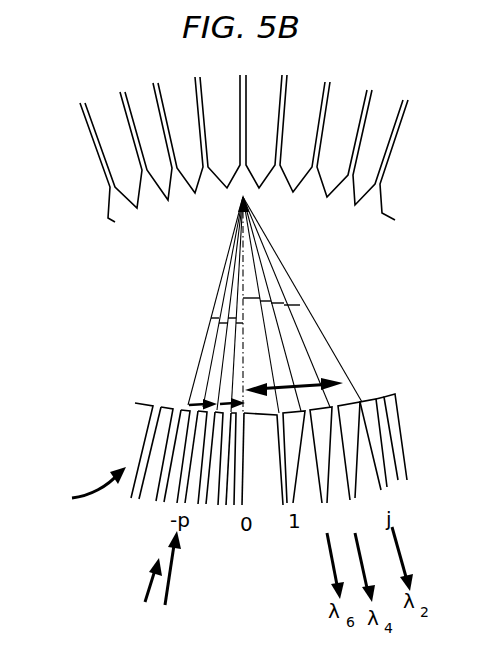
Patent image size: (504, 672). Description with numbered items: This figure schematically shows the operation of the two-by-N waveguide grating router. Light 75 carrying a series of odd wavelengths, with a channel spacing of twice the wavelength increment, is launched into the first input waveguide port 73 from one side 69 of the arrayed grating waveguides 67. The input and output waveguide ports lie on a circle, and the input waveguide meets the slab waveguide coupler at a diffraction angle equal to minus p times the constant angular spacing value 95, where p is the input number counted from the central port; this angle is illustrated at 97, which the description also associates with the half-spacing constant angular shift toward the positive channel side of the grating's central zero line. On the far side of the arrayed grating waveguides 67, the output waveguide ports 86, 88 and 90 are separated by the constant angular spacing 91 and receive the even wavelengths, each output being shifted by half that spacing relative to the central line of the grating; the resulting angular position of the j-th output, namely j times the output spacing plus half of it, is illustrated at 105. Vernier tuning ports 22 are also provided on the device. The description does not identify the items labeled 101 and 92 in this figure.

The arrayed grating waveguides 67 is at (400, 132).
The free propagation region (output star coupler) 101 is at (452, 249).
The constant angular spacing value 95 is at (213, 318).
The constant angular spacing of output waveguide ports 91 is at (287, 300).
The half angular spacing of output waveguides 92 is at (247, 366).
The Vernier tuning ports 22 is at (272, 483).
The constant angular shift 97 is at (216, 401).
The angular position jΔθo+Δθo/2 105 is at (333, 396).
The side of the arrayed grating waveguides 69 is at (86, 491).
The light 75 is at (143, 592).
The first input waveguide port 73 is at (182, 498).
The output waveguide port 90 is at (320, 503).
The output waveguide port 88 is at (352, 502).
The output waveguide port 86 is at (386, 490).